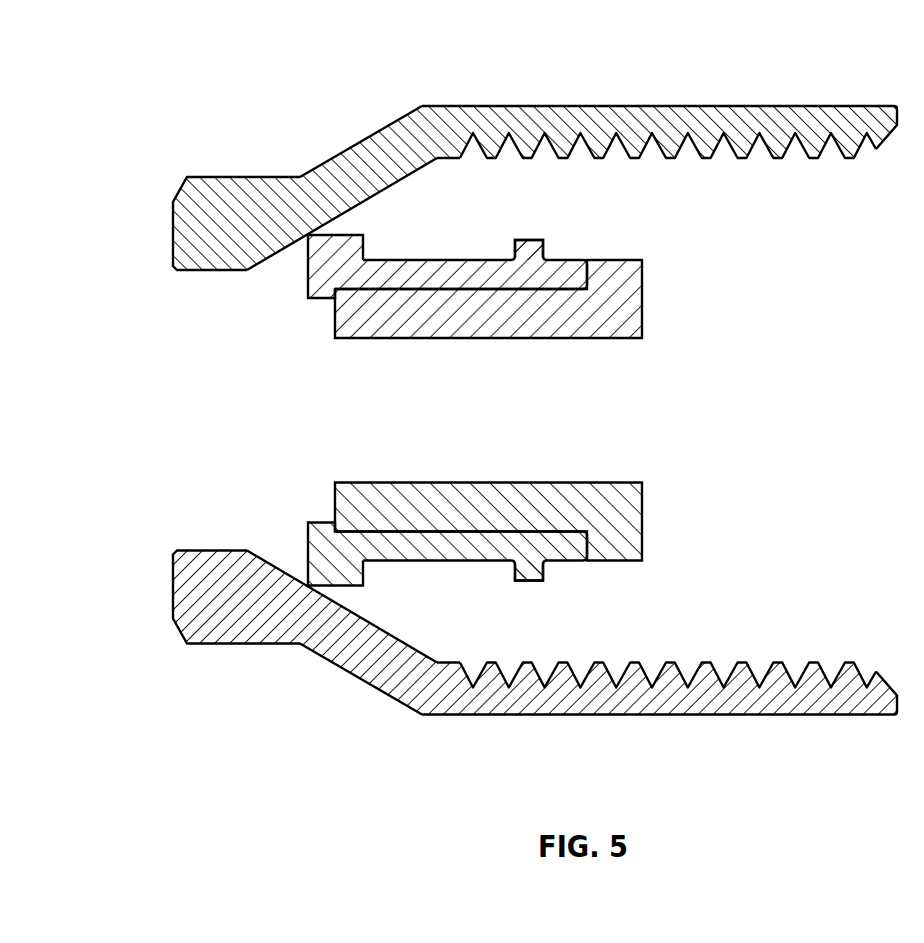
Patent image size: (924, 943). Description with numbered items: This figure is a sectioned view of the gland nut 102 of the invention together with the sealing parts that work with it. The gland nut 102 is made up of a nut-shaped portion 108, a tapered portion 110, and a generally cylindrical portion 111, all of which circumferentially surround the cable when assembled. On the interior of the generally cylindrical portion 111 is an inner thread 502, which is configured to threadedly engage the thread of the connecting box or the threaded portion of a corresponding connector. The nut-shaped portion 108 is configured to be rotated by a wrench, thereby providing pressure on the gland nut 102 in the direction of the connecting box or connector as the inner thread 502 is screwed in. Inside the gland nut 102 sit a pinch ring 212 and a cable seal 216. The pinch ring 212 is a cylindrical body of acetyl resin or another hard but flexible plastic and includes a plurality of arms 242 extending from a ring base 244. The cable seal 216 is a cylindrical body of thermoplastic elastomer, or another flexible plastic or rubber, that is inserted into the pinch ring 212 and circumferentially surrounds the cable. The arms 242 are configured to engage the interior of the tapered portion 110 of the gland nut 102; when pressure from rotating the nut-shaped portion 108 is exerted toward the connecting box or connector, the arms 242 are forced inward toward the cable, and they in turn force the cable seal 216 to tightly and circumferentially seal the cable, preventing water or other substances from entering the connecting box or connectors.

The gland nut 102 is at (105, 70).
The nut-shaped portion 108 is at (197, 176).
The tapered portion 110 is at (358, 140).
The generally cylindrical portion 111 is at (618, 105).
The inner thread 502 is at (740, 160).
The pinch ring 212 is at (307, 267).
The arms 242 is at (357, 250).
The ring base 244 is at (527, 242).
The cable seal 216 is at (335, 315).